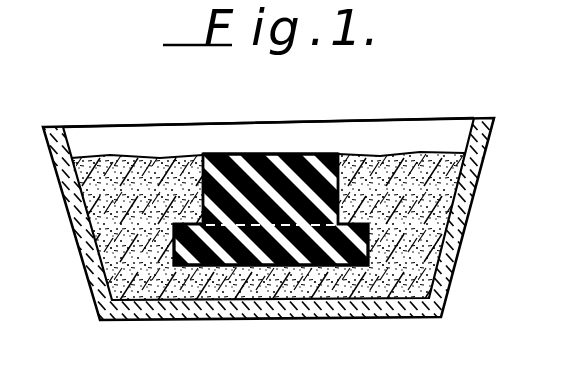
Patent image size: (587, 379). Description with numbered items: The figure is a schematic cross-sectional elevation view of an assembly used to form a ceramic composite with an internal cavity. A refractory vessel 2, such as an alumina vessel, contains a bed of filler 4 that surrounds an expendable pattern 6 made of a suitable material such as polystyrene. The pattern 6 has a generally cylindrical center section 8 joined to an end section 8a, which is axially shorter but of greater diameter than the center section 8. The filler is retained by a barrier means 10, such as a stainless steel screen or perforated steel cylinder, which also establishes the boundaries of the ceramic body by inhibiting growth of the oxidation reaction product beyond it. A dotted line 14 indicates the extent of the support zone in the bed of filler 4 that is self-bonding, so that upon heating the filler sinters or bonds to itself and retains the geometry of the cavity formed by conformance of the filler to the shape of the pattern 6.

The refractory vessel 2 is at (462, 237).
The bed of filler 4 is at (420, 162).
The pattern 6 is at (295, 143).
The center section 8 is at (325, 153).
The end section 8a is at (303, 264).
The barrier means 10 is at (146, 152).
The dotted line 14 is at (179, 155).